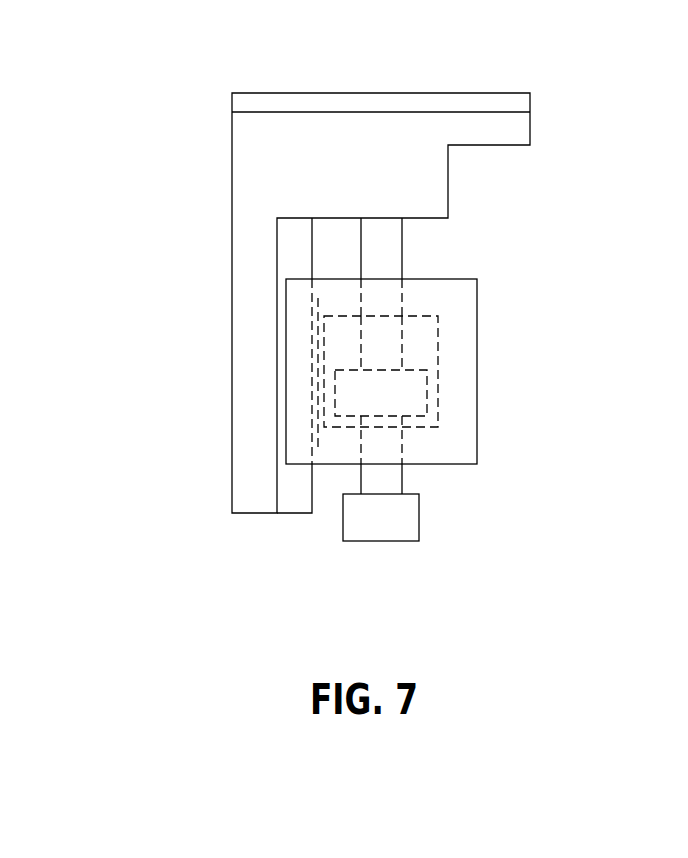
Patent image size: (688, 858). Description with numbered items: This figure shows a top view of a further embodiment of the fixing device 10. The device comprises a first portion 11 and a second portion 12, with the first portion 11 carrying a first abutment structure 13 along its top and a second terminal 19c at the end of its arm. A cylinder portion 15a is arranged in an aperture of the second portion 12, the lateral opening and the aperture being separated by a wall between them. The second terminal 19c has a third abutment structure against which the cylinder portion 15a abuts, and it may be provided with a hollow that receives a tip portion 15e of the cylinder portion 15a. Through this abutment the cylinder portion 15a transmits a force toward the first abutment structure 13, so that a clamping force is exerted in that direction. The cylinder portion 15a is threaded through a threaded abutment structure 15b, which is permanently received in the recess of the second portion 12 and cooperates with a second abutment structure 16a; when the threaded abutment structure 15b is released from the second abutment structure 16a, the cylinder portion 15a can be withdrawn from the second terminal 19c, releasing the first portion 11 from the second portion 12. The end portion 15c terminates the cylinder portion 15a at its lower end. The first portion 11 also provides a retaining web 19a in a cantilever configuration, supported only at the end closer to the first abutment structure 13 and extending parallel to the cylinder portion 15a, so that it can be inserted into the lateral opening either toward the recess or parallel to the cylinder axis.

The fixing device 10 is at (190, 106).
The first portion 11 is at (243, 257).
The second portion 12 is at (477, 352).
The first abutment structure 13 is at (430, 112).
The cylinder portion 15a is at (402, 254).
The threaded abutment structure 15b is at (350, 399).
The terminal end block 15c is at (397, 541).
The tip portion 15e is at (402, 224).
The second abutment structure 16a is at (432, 427).
The retaining web 19a is at (290, 498).
The second terminal 19c is at (373, 218).